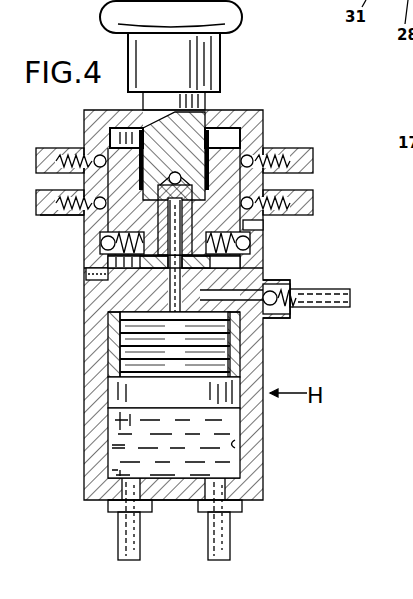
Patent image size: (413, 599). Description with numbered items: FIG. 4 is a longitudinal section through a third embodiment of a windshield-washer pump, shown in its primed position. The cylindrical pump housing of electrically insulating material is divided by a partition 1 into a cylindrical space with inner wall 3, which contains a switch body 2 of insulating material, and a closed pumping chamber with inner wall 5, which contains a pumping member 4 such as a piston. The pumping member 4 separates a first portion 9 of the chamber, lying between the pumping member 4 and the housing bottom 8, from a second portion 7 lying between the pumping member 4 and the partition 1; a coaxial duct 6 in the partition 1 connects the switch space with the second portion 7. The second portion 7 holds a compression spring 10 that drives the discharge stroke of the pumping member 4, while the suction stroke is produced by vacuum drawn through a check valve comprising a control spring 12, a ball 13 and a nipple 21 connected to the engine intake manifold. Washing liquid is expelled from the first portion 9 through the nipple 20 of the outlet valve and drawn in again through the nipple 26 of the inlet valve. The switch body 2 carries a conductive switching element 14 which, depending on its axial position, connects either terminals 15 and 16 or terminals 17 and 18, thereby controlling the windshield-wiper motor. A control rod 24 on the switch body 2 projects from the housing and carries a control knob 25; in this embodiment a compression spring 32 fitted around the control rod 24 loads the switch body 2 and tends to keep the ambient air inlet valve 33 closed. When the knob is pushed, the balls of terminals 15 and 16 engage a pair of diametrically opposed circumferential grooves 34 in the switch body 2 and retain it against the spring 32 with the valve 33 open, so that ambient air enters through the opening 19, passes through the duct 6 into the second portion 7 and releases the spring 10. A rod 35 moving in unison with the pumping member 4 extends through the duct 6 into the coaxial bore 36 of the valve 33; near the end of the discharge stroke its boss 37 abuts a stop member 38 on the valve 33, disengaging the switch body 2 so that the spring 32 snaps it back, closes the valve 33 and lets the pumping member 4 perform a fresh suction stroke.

The partition 1 is at (130, 297).
The switch body 2 is at (243, 150).
The inner wall of switch space 3 is at (107, 138).
The pumping member 4 is at (200, 395).
The inner wall of pumping chamber 5 is at (233, 443).
The coaxial duct 6 is at (240, 330).
The second portion of pumping chamber 7 is at (143, 338).
The housing bottom 8 is at (173, 500).
The first portion of pumping chamber 9 is at (120, 442).
The compression spring 10 is at (110, 380).
The control spring 12 is at (307, 308).
The ball 13 is at (290, 313).
The switching element 14 is at (85, 186).
The terminal 15 is at (43, 217).
The terminal 16 is at (313, 203).
The terminal 17 is at (38, 150).
The terminal 18 is at (313, 155).
The opening 19 is at (87, 277).
The nipple of outlet valve 20 is at (123, 543).
The nipple 21 is at (350, 290).
The control rod 24 is at (182, 107).
The control knob 25 is at (227, 15).
The nipple of inlet valve 26 is at (228, 545).
The compression spring 32 is at (210, 147).
The ambient air inlet valve 33 is at (158, 217).
The circumferential grooves 34 is at (263, 225).
The rod 35 is at (110, 357).
The coaxial bore 36 is at (240, 237).
The boss 37 is at (190, 205).
The stop member 38 is at (263, 268).